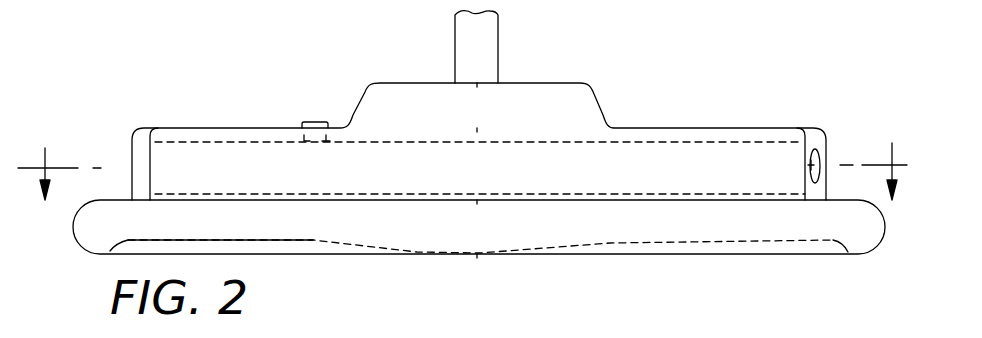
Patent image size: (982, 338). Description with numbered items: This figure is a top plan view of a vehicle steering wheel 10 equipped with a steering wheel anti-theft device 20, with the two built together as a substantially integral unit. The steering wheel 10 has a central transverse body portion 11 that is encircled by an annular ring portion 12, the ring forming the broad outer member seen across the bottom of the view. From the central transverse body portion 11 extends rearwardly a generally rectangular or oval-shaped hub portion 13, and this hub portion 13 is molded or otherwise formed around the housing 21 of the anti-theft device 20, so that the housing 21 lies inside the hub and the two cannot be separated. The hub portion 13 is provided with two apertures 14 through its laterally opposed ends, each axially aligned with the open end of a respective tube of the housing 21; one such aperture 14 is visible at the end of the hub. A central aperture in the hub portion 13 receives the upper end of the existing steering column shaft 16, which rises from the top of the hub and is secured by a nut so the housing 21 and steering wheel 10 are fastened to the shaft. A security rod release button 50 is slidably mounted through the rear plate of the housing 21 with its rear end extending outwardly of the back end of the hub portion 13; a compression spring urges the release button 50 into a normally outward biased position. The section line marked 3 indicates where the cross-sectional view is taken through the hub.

The section line 3- 3 is at (462, 157).
The vehicle steering wheel 10 is at (375, 258).
The central transverse body portion 11 is at (712, 240).
The annular ring portion 12 is at (858, 243).
The hub portion 13 is at (201, 128).
The apertures 14 is at (824, 152).
The steering column shaft 16 is at (494, 33).
The steering wheel anti-theft device 20 is at (489, 107).
The housing 21 is at (632, 131).
The security rod release button 50 is at (321, 122).